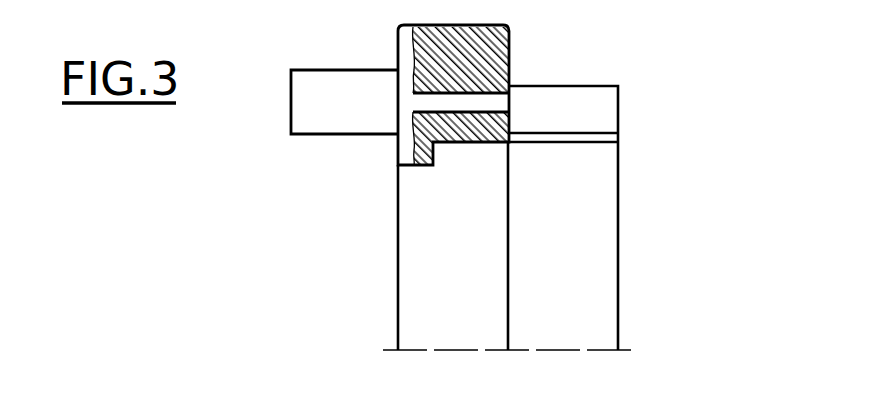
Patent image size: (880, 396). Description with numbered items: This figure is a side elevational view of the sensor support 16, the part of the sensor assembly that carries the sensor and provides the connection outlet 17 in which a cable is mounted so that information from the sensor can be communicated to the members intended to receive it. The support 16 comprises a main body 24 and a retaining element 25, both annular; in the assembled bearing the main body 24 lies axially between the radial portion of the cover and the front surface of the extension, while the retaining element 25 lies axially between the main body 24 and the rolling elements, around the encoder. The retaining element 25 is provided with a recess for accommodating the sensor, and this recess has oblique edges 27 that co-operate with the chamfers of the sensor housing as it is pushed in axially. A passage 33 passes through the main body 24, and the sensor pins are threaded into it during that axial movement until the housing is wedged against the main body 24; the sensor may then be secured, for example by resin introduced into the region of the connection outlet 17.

The connection outlet 17 is at (356, 106).
The main body 24 is at (467, 55).
The passage 33 is at (458, 102).
The oblique edges 27 is at (563, 112).
The retaining element 25 is at (570, 225).
The sensor support 16 is at (618, 283).